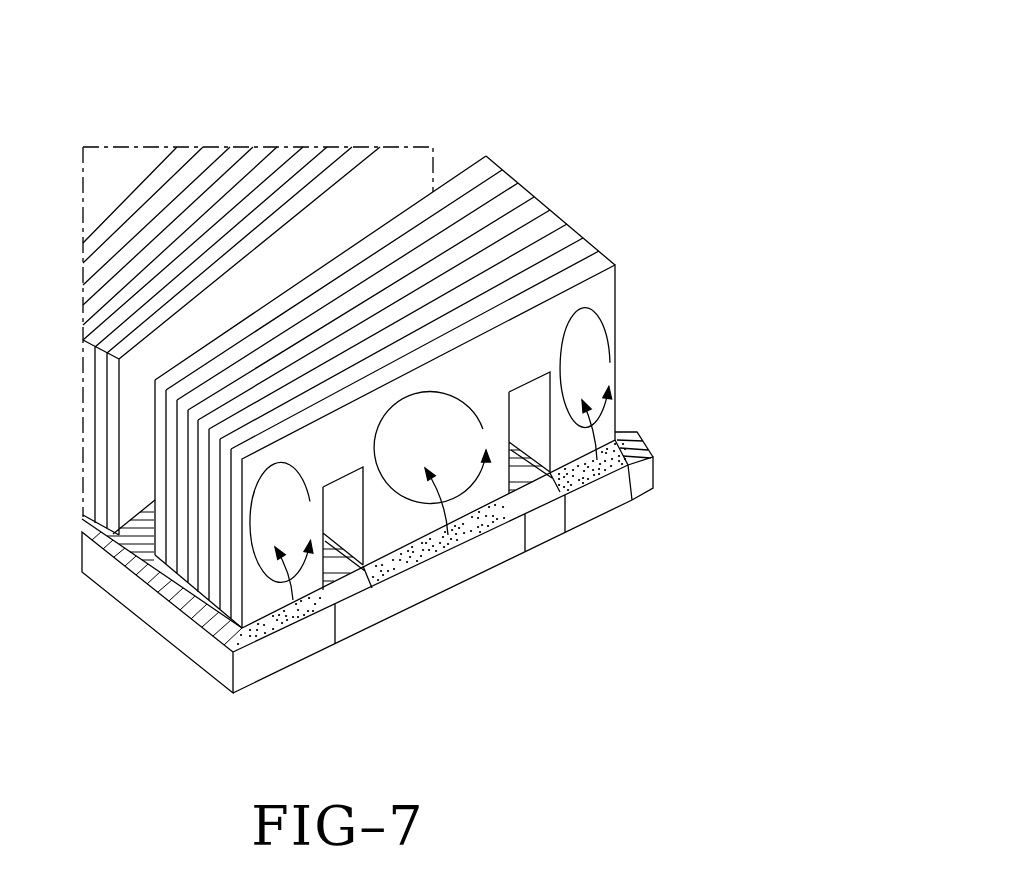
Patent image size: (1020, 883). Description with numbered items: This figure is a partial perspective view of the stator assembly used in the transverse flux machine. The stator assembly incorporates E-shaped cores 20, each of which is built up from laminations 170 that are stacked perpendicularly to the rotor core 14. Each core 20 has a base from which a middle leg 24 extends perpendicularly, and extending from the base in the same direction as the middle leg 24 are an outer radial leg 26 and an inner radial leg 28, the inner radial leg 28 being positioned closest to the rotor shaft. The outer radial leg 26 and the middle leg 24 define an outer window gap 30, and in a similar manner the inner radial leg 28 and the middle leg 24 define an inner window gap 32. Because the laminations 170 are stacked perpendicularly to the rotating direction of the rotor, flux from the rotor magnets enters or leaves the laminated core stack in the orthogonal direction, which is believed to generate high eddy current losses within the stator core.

The rotor core 14 is at (682, 462).
The E-shaped core 20 is at (444, 375).
The lamination 170 is at (599, 251).
The middle leg 24 is at (400, 525).
The outer radial leg 26 is at (610, 425).
The inner radial leg 28 is at (250, 598).
The outer window gap 30 is at (520, 412).
The inner window gap 32 is at (332, 505).